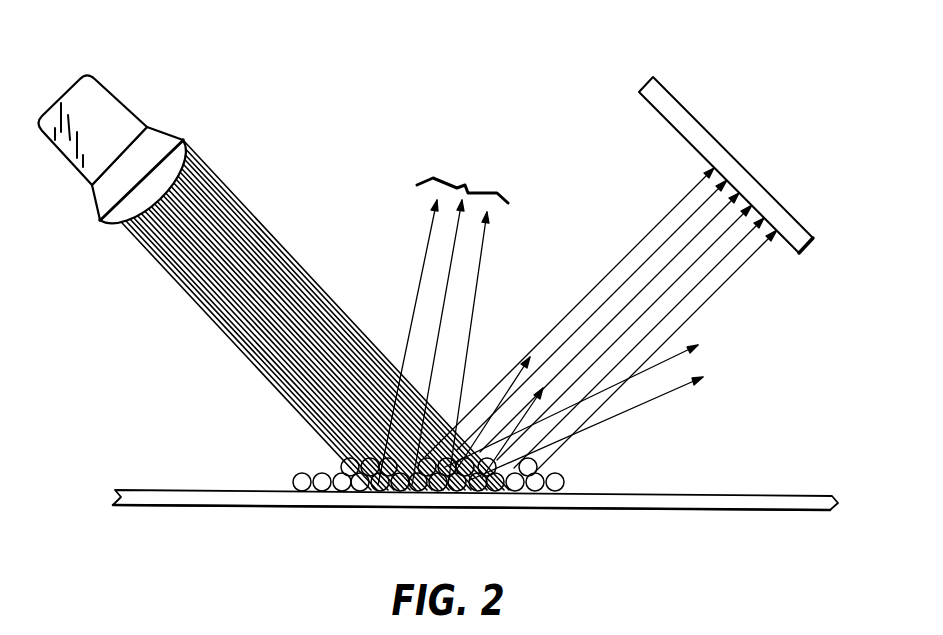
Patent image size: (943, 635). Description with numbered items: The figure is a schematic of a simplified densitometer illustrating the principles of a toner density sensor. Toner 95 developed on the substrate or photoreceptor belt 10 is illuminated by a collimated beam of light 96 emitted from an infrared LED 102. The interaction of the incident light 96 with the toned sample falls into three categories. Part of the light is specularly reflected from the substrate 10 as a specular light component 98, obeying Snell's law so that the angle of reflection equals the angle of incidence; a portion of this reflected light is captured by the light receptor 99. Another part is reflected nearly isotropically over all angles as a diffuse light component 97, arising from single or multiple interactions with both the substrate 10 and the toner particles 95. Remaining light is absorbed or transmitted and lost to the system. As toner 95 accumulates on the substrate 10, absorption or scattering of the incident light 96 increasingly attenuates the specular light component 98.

The substrate 10 is at (652, 500).
The toner 95 is at (297, 480).
The collimated beam of light 96 is at (270, 257).
The diffuse light component 97 is at (463, 185).
The specular light component 98 is at (640, 290).
The light receptor 99 is at (730, 160).
The infrared LED 102 is at (123, 100).